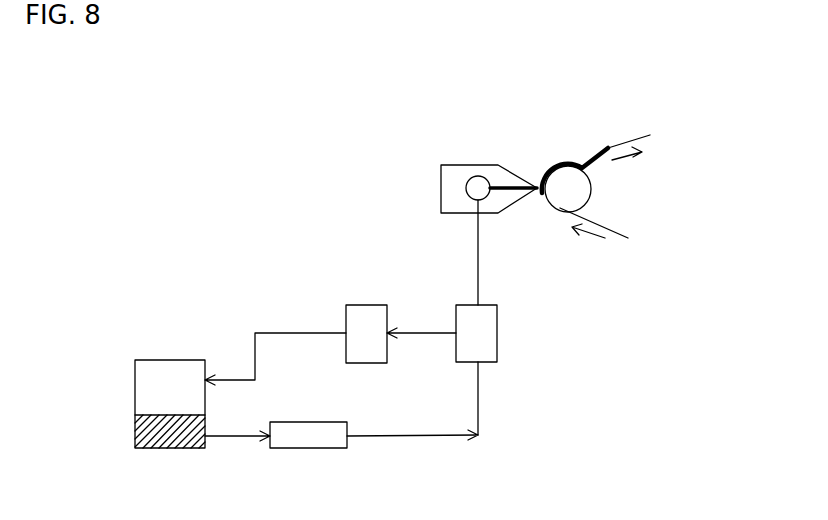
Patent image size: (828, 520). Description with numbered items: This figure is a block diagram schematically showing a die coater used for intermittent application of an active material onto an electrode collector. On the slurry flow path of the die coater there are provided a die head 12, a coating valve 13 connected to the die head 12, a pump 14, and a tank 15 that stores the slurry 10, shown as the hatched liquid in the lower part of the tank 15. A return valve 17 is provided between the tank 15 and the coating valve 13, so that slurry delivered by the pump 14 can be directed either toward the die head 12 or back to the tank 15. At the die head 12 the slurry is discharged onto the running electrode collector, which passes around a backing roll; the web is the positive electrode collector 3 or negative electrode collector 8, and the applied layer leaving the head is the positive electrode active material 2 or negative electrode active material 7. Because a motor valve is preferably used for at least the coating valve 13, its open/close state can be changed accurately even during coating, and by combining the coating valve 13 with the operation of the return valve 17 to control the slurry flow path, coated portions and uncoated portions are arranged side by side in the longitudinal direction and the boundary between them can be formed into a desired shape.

The positive electrode active material 2 is at (596, 145).
The negative electrode active material 7 is at (553, 178).
The positive electrode collector 3 is at (619, 237).
The negative electrode collector 8 is at (621, 236).
The slurry 10 is at (163, 441).
The die head 12 is at (463, 169).
The coating valve 13 is at (484, 322).
The pump 14 is at (312, 440).
The tank 15 is at (165, 360).
The return valve 17 is at (370, 318).